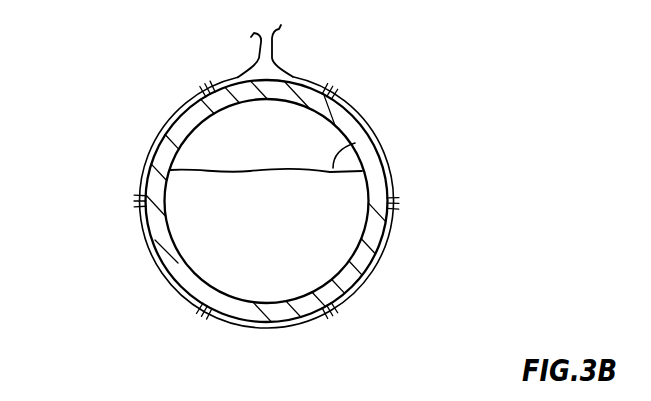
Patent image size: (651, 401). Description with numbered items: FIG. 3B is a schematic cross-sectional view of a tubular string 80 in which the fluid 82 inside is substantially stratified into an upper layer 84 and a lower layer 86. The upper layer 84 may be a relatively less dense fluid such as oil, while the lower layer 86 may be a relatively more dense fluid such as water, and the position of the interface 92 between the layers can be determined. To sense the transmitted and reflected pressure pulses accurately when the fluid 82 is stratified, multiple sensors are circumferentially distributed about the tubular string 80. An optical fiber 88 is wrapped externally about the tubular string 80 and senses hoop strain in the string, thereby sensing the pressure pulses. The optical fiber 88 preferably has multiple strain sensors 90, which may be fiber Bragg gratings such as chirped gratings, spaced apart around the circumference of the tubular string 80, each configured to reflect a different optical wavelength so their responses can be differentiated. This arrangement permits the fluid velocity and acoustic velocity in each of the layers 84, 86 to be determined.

The tubular string 80 is at (381, 258).
The fluid 82 is at (336, 194).
The upper layer 84 is at (207, 137).
The lower layer 86 is at (192, 241).
The optical fiber 88 is at (273, 52).
The strain sensors 90 is at (203, 86).
The interface 92 is at (355, 143).